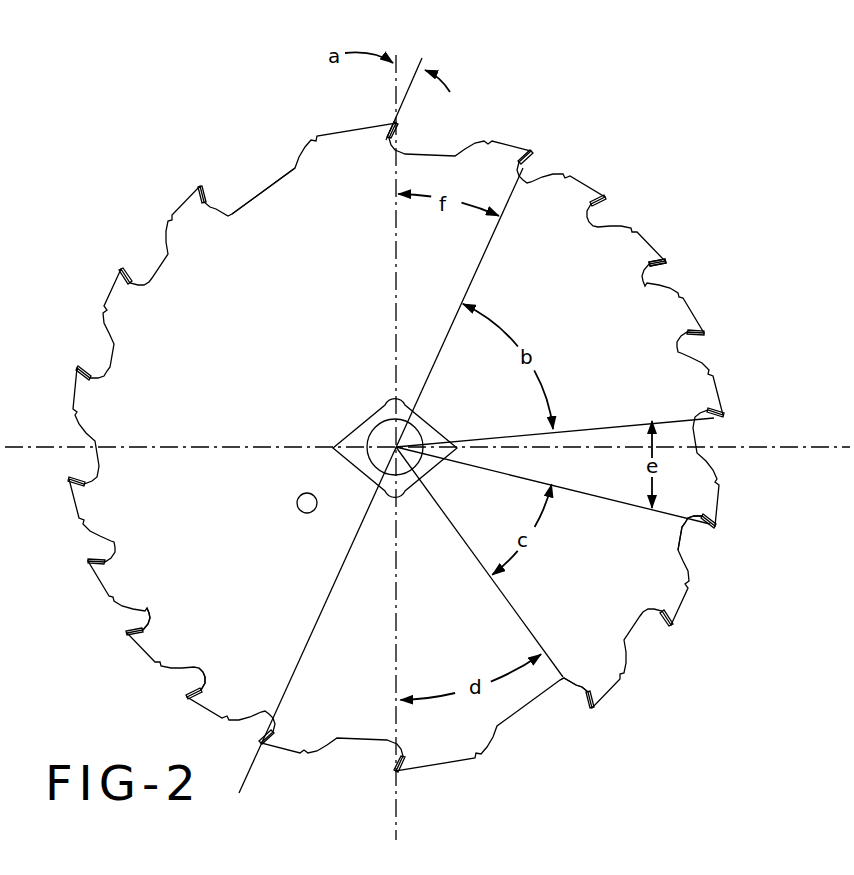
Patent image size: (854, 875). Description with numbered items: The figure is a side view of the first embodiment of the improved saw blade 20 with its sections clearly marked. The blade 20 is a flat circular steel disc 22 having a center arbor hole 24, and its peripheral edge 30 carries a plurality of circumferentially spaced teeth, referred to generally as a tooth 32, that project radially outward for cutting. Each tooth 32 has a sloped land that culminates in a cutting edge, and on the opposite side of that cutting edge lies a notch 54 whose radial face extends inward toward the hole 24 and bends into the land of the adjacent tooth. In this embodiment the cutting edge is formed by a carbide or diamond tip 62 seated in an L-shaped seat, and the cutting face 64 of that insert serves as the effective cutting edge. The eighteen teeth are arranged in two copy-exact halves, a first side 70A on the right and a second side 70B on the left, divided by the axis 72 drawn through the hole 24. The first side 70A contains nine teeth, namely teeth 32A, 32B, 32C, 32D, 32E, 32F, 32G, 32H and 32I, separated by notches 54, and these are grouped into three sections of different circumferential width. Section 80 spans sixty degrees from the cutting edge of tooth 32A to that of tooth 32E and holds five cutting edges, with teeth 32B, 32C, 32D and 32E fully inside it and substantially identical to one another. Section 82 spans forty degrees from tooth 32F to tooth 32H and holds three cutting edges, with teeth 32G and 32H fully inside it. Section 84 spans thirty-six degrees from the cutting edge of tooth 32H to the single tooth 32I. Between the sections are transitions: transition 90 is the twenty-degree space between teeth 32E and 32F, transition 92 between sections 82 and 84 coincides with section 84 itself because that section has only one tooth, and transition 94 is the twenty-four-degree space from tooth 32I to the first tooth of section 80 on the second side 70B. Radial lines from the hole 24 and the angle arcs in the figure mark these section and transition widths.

The saw blade 20 is at (374, 416).
The circular disc 22 is at (174, 343).
The center arbor hole 24 is at (380, 432).
The peripheral edge 30 is at (276, 179).
The tooth 32 is at (186, 199).
The tooth 32A is at (531, 157).
The tooth 32B is at (604, 206).
The tooth 32C is at (663, 268).
The tooth 32D is at (703, 338).
The tooth 32E is at (722, 415).
The tooth 32F is at (716, 526).
The tooth 32G is at (669, 626).
The tooth 32H is at (592, 708).
The tooth 32I is at (399, 772).
The notch 54 is at (690, 541).
The carbide or diamond tip 62 is at (128, 640).
The cutting face 64 is at (139, 630).
The first side 70A is at (630, 321).
The second side 70B is at (211, 281).
The axis 72 is at (251, 768).
The section 80 is at (574, 317).
The section 82 is at (577, 569).
The section 84 is at (450, 621).
The transition 90 is at (599, 472).
The transition 92 is at (531, 620).
The transition 94 is at (438, 256).